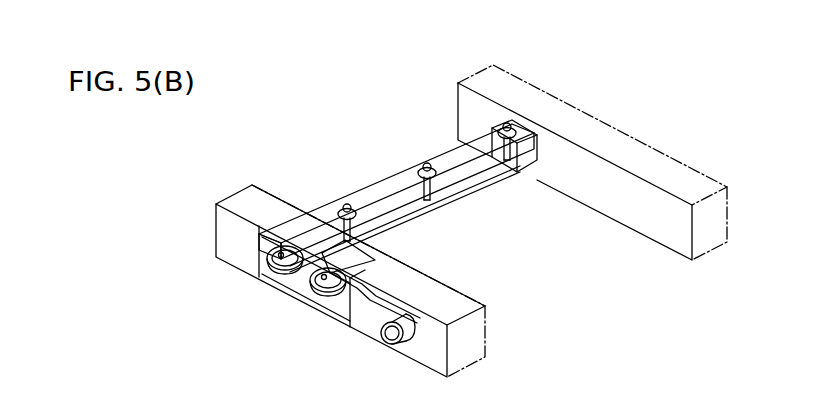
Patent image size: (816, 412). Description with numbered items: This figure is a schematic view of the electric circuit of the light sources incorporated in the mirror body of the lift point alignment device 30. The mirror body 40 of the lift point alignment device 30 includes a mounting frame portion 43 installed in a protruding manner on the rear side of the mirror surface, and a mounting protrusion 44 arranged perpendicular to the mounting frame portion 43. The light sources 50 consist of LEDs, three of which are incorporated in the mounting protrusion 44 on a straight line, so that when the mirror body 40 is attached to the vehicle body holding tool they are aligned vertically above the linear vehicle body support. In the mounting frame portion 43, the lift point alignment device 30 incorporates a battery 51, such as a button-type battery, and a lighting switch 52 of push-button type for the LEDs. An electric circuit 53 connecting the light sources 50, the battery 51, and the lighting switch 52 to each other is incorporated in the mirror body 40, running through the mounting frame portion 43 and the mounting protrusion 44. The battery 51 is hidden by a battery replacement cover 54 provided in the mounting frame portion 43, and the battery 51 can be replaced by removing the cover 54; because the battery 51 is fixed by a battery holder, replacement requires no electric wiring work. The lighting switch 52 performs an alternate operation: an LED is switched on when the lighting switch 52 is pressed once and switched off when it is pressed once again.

The lift point alignment device 30 is at (613, 118).
The mirror body 40 is at (345, 204).
The mounting frame portion 43 is at (215, 233).
The mounting protrusion 44 is at (398, 167).
The light sources 50 is at (425, 165).
The battery 51 is at (276, 271).
The lighting switch 52 is at (389, 341).
The electric circuit 53 is at (470, 189).
The battery replacement cover 54 is at (293, 226).